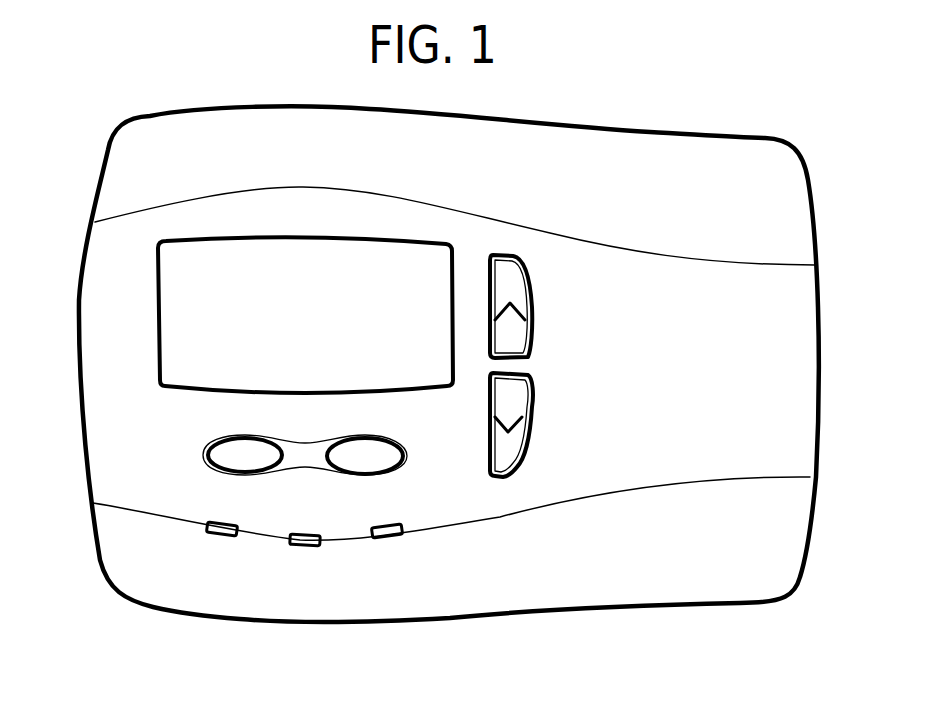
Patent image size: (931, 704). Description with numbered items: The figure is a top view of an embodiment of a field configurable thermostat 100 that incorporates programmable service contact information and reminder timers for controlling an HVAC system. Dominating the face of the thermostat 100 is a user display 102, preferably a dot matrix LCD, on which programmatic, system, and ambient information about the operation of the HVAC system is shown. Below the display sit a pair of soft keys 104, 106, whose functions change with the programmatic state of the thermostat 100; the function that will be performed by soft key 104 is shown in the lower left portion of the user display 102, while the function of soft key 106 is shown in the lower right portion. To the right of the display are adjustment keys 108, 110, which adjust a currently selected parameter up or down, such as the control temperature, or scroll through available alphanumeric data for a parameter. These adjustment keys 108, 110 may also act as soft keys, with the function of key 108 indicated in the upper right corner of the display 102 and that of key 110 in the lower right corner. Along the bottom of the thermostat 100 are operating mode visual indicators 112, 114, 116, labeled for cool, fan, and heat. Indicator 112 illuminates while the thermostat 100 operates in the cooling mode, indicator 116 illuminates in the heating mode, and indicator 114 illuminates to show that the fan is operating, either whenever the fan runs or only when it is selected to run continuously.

The thermostat 100 is at (658, 88).
The user display 102 is at (198, 281).
The soft key 104 is at (232, 452).
The soft key 106 is at (382, 457).
The adjustment key 108 is at (513, 332).
The adjustment key 110 is at (513, 403).
The operating mode visual indicator 112 is at (237, 538).
The operating mode visual indicator 114 is at (318, 543).
The operating mode visual indicator 116 is at (402, 535).